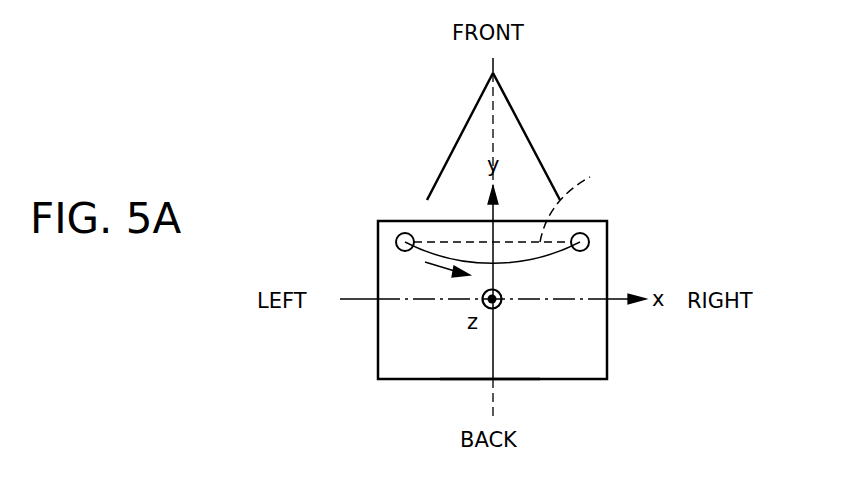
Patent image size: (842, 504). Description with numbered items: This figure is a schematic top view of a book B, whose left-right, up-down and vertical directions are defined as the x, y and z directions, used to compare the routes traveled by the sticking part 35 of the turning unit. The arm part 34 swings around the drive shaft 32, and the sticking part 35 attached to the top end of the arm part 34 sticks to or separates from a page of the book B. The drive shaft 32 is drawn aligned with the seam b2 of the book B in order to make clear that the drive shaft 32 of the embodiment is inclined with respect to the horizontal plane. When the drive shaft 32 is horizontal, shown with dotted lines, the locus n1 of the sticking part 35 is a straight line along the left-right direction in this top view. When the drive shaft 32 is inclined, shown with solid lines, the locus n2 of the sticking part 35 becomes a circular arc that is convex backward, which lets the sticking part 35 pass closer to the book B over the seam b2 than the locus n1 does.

The drive shaft 32 is at (493, 62).
The arm part 34 is at (454, 147).
The sticking part 35 is at (396, 240).
The book B is at (563, 367).
The seam b2 is at (492, 365).
The locus n1 is at (569, 200).
The locus n2 is at (538, 260).